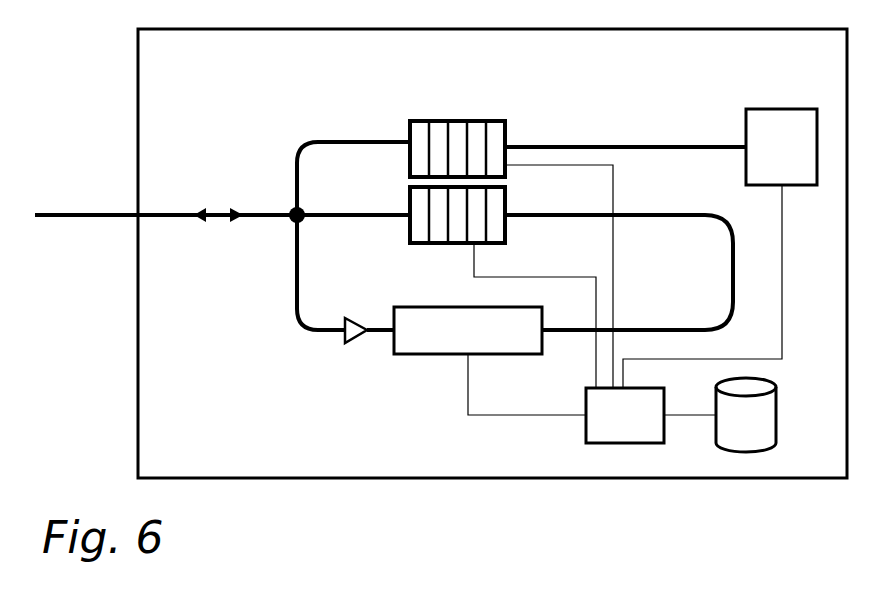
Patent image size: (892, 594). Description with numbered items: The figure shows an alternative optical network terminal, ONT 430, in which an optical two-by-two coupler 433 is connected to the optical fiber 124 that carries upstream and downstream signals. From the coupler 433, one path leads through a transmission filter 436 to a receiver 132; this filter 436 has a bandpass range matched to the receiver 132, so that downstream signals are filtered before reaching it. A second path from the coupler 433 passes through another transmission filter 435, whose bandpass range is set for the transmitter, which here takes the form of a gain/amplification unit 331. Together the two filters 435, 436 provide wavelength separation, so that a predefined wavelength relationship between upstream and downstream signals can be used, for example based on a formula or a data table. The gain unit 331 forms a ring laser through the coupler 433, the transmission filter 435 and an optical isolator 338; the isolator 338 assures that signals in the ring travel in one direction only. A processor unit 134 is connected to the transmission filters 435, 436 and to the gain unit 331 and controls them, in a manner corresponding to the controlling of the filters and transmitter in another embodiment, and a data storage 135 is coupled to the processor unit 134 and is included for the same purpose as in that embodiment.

The optical fiber 124 is at (92, 217).
The receiver 132 is at (661, 147).
The processor unit 134 is at (625, 304).
The data storage 135 is at (720, 415).
The gain/amplification unit 331 is at (468, 330).
The optical isolator 338 is at (345, 347).
The ONT 430 is at (492, 253).
The optical 2×2 coupler 433 is at (288, 210).
The transmission filter 435 is at (408, 235).
The transmission filter 436 is at (408, 133).